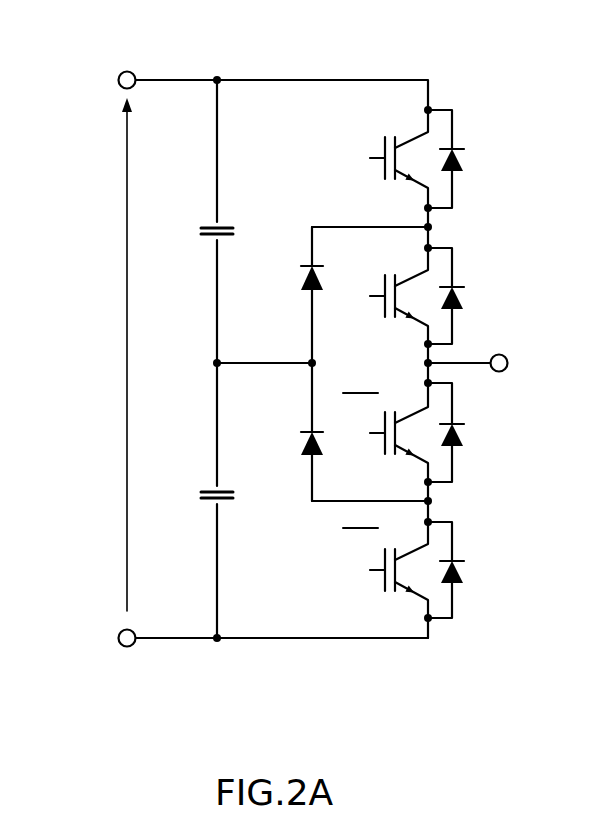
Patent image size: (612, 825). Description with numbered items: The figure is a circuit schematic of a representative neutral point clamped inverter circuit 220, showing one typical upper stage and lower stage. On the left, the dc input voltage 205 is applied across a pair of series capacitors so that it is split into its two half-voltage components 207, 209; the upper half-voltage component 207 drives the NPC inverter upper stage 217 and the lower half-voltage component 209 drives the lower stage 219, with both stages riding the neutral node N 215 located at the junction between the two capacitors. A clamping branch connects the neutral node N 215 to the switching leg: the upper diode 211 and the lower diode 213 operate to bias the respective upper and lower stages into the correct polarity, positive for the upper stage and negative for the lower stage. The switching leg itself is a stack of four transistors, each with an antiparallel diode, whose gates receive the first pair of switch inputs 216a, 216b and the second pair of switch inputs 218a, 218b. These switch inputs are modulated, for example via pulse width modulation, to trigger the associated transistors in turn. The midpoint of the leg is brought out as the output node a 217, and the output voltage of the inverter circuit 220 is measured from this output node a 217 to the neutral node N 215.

The input voltage Vdc 205 is at (82, 378).
The Vdc/2 component 207 is at (176, 182).
The Vdc/2 component 209 is at (204, 511).
The upper diode 211 is at (300, 285).
The lower diode 213 is at (303, 462).
The neutral node N 215 is at (222, 368).
The switch input Sa1 216a is at (356, 160).
The switch input Sa1 216b is at (359, 431).
The upper stage / output node a 217 is at (500, 372).
The switch input Sa2 218a is at (357, 297).
The switch input Sa2 218b is at (364, 569).
The lower stage 219 is at (272, 600).
The NPC inverter circuit 220 is at (410, 42).